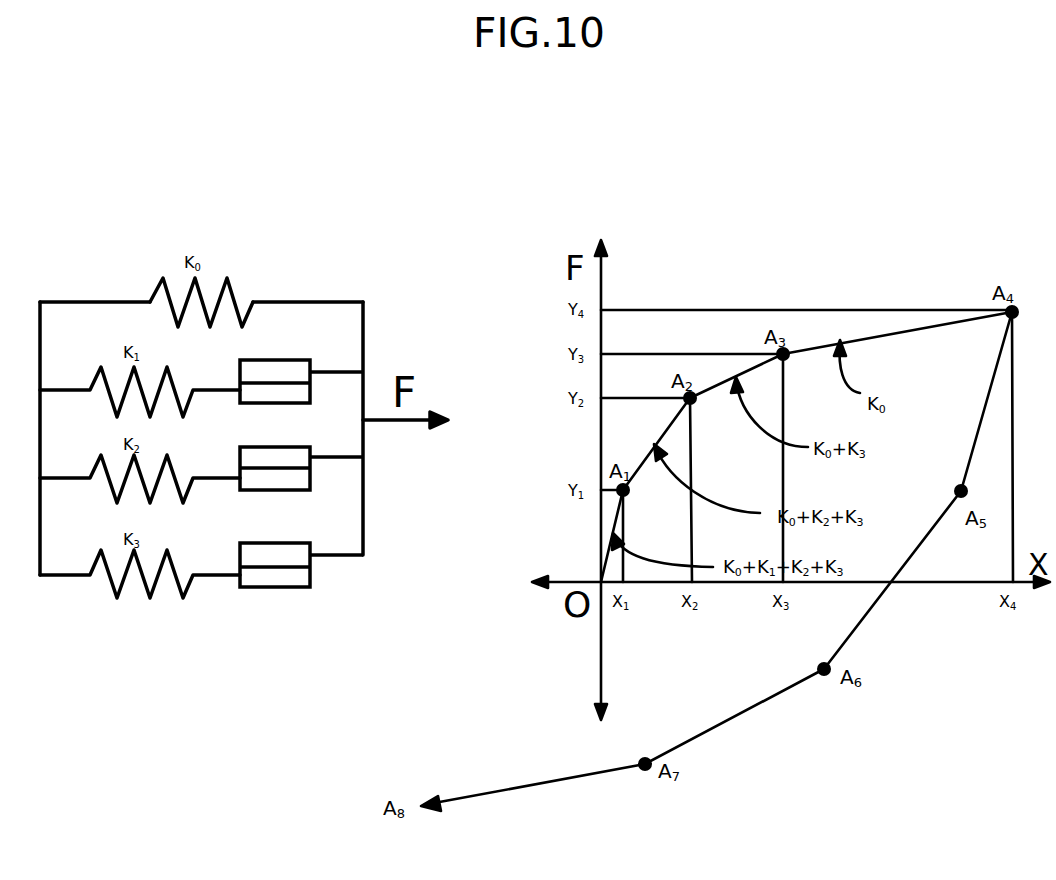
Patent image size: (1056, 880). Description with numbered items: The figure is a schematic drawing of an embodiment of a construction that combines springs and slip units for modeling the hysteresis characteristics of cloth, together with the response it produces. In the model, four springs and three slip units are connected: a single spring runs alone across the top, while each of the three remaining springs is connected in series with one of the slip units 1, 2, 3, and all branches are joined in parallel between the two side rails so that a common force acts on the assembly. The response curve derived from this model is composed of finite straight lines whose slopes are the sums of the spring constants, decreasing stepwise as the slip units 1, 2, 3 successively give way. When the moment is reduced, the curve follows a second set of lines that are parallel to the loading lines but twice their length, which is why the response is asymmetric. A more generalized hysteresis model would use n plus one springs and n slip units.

The slip unit 1 is at (301, 372).
The slip unit 2 is at (301, 461).
The slip unit 3 is at (301, 557).